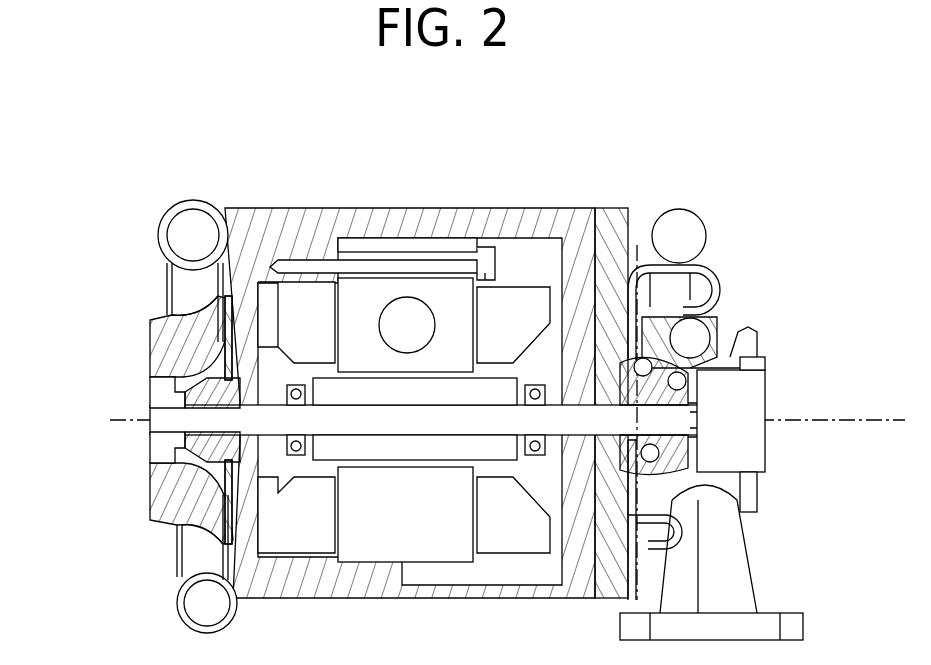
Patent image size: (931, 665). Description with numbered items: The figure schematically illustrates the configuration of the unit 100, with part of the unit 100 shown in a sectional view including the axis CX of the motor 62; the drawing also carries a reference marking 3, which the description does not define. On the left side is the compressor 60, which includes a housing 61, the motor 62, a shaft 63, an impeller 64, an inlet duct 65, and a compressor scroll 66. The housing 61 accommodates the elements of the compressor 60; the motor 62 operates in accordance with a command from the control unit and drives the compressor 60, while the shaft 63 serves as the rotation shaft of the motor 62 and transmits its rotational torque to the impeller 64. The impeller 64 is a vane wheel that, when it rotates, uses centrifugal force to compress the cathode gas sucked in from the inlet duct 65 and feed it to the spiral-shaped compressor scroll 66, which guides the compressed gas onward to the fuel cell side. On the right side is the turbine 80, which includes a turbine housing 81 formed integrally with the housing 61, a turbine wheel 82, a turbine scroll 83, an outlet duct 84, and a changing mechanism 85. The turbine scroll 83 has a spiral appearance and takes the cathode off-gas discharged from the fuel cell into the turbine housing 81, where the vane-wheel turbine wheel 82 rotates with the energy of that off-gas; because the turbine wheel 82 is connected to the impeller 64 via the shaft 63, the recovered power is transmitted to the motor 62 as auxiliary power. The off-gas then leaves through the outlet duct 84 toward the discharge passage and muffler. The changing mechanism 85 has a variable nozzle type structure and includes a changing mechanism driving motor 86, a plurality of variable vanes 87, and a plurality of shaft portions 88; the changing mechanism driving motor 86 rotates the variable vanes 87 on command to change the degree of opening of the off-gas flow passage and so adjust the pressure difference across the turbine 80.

The unit 100 is at (147, 115).
The compressor 60 is at (347, 118).
The housing 61 is at (250, 213).
The motor 62 is at (396, 295).
The shaft 63 is at (402, 425).
The impeller 64 is at (193, 458).
The inlet duct 65 is at (157, 397).
The compressor scroll 66 is at (183, 245).
The turbine 80 is at (735, 134).
The turbine housing 81 is at (750, 330).
The turbine wheel 82 is at (685, 443).
The turbine scroll 83 is at (680, 302).
The outlet duct 84 is at (738, 407).
The changing mechanism 85 is at (727, 190).
The changing mechanism driving motor 86 is at (700, 235).
The variable vanes 87 is at (647, 510).
The shaft portions 88 is at (670, 500).
The reference plane 3 is at (640, 255).